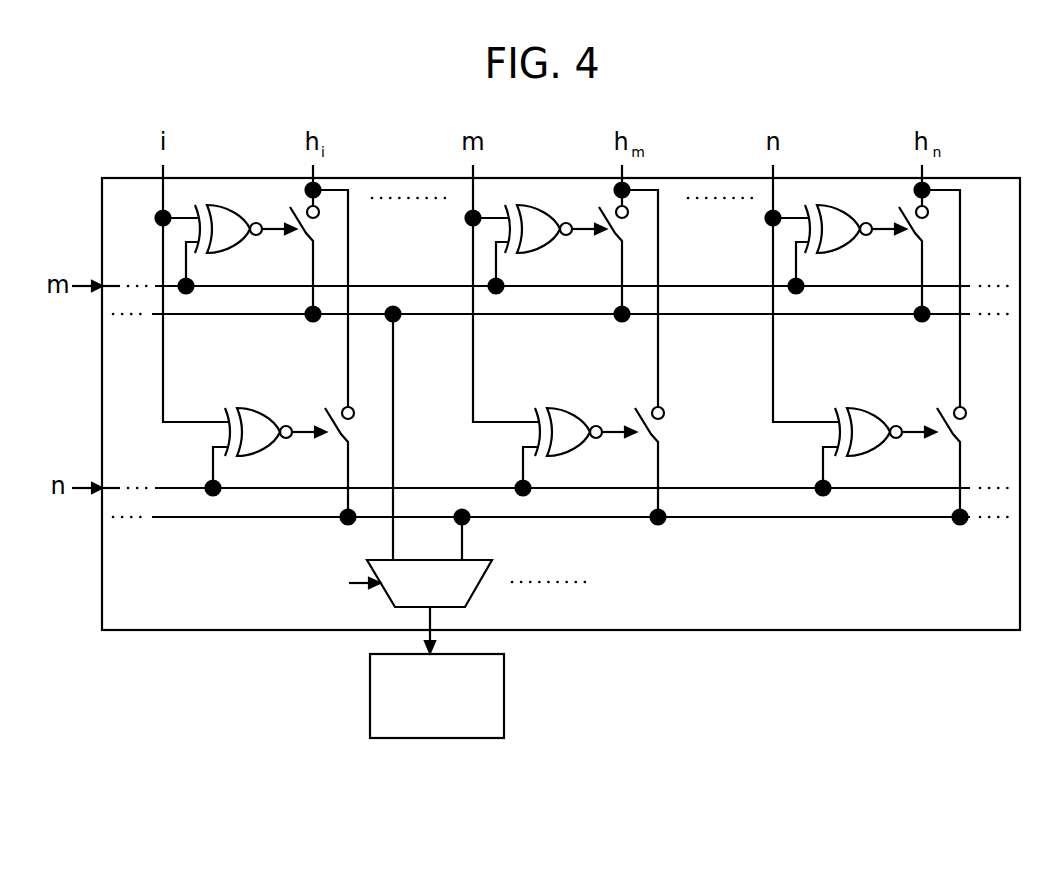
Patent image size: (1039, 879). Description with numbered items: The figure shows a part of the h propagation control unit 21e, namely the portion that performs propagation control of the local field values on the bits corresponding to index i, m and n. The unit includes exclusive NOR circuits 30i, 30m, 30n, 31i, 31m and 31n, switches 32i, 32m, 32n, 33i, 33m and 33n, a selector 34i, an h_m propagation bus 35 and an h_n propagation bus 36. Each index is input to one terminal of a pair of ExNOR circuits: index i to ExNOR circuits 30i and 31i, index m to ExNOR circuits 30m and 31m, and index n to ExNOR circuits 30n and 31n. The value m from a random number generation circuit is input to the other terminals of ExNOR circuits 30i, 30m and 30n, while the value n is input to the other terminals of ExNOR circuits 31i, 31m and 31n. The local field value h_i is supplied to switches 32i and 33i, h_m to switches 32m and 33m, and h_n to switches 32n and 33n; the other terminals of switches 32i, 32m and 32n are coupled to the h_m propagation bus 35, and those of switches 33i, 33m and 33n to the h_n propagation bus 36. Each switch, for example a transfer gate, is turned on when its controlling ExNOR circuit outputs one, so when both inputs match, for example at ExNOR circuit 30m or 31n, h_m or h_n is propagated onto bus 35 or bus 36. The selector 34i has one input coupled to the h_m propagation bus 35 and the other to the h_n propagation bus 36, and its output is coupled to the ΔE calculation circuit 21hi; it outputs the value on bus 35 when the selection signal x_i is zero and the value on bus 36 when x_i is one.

The h propagation control unit 21e is at (980, 178).
The ΔE calculation circuit 21hi is at (443, 738).
The ExNOR circuit 30i is at (232, 256).
The ExNOR circuit 30m is at (542, 256).
The ExNOR circuit 30n is at (842, 256).
The ExNOR circuit 31i is at (252, 458).
The ExNOR circuit 31m is at (562, 458).
The ExNOR circuit 31n is at (862, 458).
The switch 32i is at (300, 234).
The switch 32m is at (609, 234).
The switch 32n is at (909, 234).
The switch 33i is at (336, 437).
The switch 33m is at (646, 437).
The switch 33n is at (948, 437).
The selector 34i is at (470, 588).
The h_m propagation bus 35 is at (428, 316).
The h_n propagation bus 36 is at (733, 519).